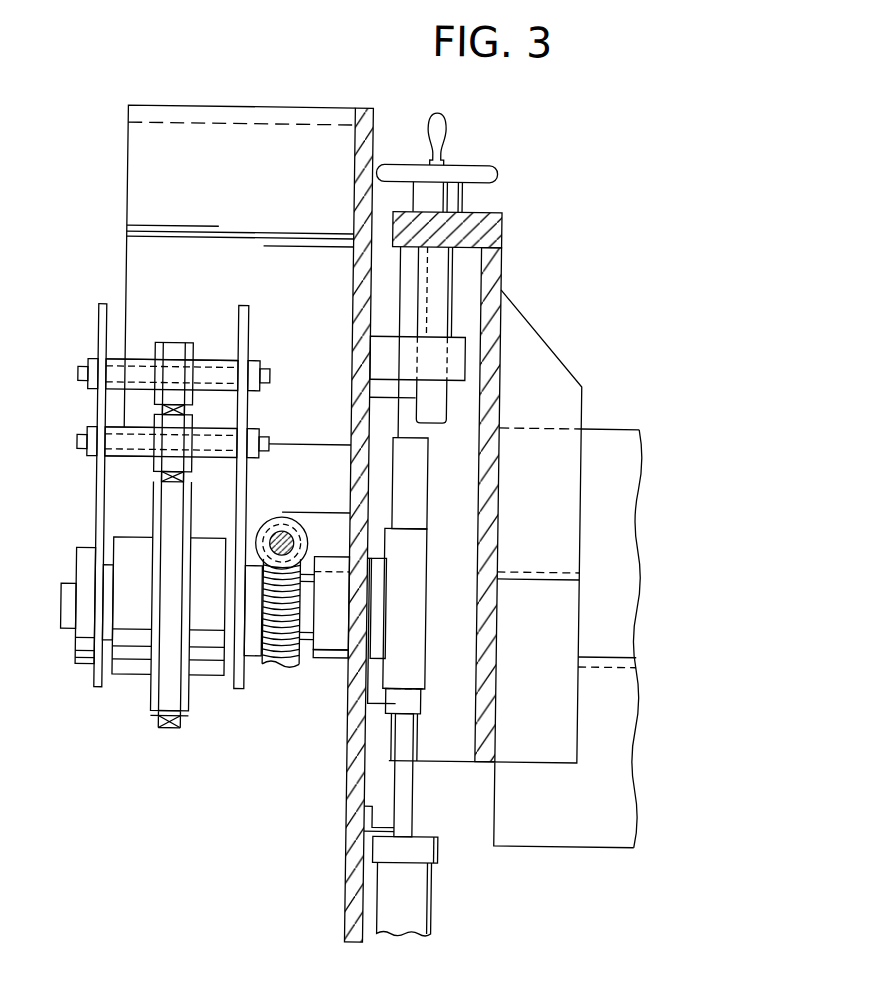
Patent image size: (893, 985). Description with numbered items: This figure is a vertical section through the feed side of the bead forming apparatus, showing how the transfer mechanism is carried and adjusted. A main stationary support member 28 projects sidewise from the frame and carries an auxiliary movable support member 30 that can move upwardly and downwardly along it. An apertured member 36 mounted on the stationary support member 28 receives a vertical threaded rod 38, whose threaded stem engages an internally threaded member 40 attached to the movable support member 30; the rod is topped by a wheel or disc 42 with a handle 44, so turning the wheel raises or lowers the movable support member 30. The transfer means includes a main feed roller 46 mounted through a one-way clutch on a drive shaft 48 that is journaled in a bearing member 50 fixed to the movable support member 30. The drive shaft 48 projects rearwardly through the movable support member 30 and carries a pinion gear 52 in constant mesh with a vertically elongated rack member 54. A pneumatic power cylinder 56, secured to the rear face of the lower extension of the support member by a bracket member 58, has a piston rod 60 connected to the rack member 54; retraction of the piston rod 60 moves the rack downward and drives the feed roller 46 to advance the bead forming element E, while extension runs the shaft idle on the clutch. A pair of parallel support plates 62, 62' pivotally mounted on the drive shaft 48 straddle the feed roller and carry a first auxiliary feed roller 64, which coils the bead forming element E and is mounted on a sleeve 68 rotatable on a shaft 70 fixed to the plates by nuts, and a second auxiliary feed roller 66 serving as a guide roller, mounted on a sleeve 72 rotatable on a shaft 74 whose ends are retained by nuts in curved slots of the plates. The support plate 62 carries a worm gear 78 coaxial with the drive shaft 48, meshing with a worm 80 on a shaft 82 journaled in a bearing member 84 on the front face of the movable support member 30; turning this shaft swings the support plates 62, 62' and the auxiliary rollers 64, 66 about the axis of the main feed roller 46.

The main stationary support member 28 is at (580, 406).
The auxiliary movable support member 30 is at (350, 229).
The apertured member 36 is at (498, 226).
The threaded rod 38 is at (446, 292).
The internally threaded member 40 is at (463, 370).
The wheel or disc 42 is at (489, 165).
The handle 44 is at (441, 121).
The main feed roller 46 is at (191, 717).
The drive shaft 48 is at (62, 604).
The bearing member 50 is at (331, 658).
The pinion gear 52 is at (428, 590).
The rack member 54 is at (427, 500).
The pneumatic power cylinder 56 is at (436, 904).
The bracket member 58 is at (350, 836).
The piston rod 60 is at (416, 808).
The support plate 62 is at (242, 479).
The support plate 62' is at (80, 495).
The first auxiliary feed roller 64 is at (191, 470).
The second auxiliary feed roller 66 is at (176, 346).
The sleeve 68 is at (137, 461).
The shaft 70 is at (76, 446).
The sleeve 72 is at (222, 363).
The shaft 74 is at (76, 376).
The worm gear 78 is at (282, 666).
The worm 80 is at (279, 519).
The shaft 82 is at (294, 544).
The bearing member 84 is at (327, 513).
The bead forming element E is at (168, 732).